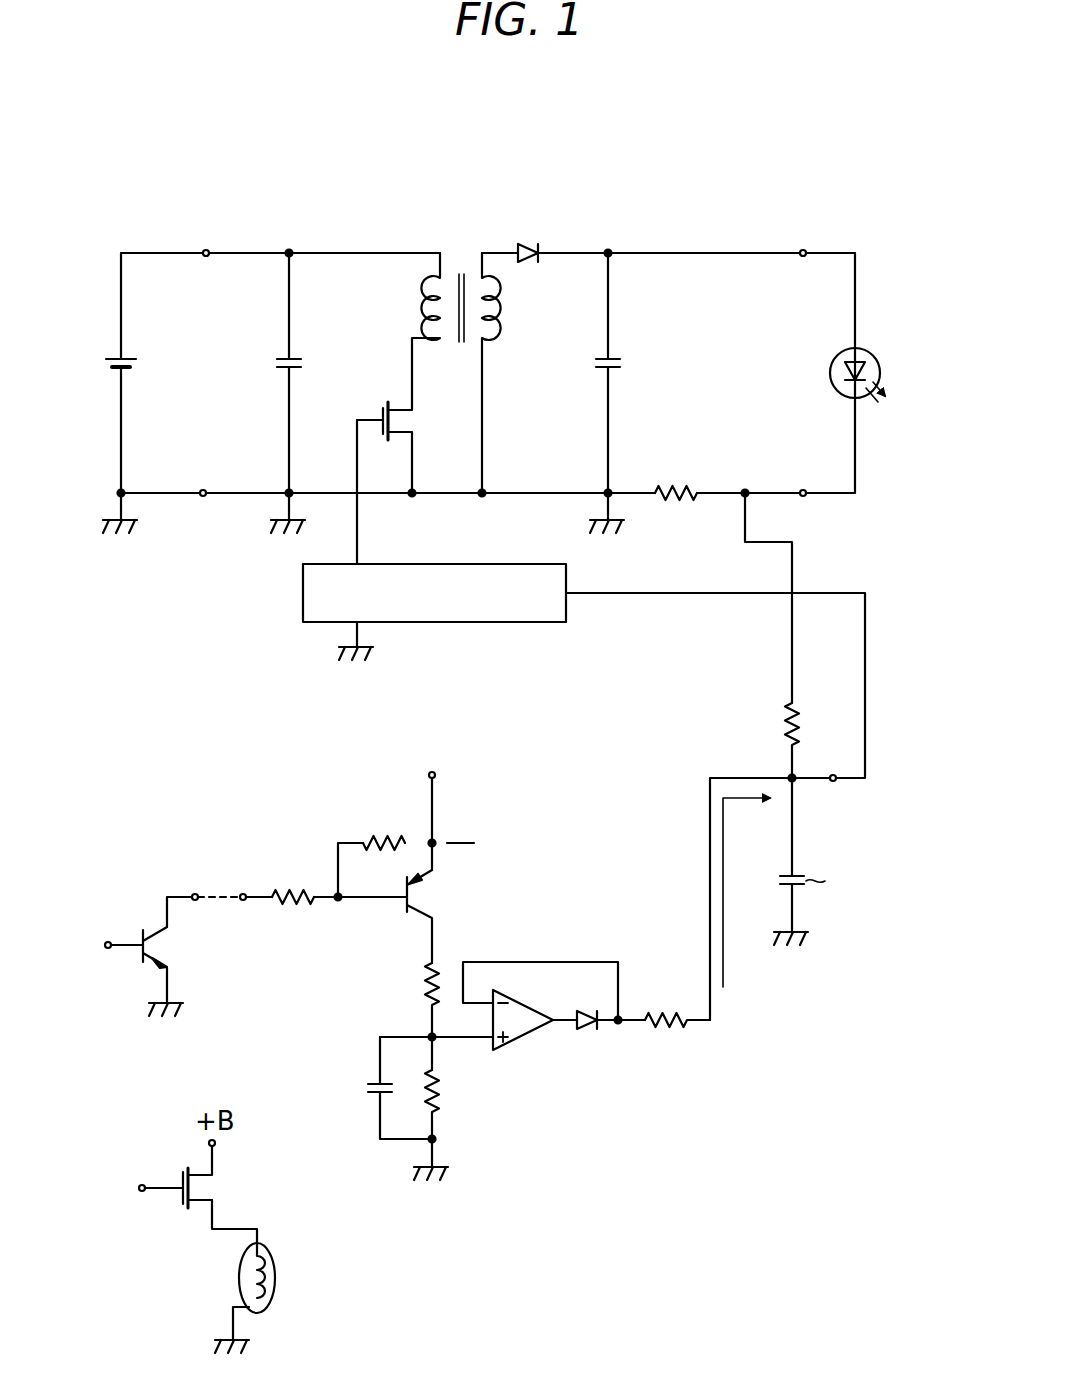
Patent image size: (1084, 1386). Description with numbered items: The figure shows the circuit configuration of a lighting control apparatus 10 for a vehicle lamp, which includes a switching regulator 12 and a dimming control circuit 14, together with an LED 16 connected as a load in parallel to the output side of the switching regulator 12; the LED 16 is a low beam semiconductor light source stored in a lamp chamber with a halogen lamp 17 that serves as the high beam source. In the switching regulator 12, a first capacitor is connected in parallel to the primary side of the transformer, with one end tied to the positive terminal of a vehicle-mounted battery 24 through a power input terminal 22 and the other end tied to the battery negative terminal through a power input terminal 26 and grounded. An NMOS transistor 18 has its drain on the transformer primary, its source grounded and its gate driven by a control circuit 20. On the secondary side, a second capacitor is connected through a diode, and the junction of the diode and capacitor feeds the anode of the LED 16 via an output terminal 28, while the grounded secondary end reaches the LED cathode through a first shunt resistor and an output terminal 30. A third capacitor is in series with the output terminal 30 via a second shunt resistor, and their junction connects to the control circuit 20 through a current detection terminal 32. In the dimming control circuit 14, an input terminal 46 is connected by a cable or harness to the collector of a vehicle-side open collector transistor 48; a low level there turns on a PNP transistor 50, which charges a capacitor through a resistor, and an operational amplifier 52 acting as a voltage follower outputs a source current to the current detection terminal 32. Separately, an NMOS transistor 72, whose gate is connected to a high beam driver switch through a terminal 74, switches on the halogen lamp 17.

The lighting control apparatus 10 is at (440, 188).
The switching regulator 12 is at (332, 212).
The dimming control circuit 14 is at (531, 774).
The LED 16 is at (880, 371).
The halogen lamp 17 is at (277, 1272).
The NMOS transistor 18 is at (414, 420).
The control circuit 20 is at (397, 564).
The power input terminal 22 is at (206, 251).
The vehicle-mounted battery 24 is at (138, 366).
The power input terminal 26 is at (206, 488).
The output terminal 28 is at (803, 250).
The output terminal 30 is at (804, 488).
The current detection terminal 32 is at (833, 783).
The input terminal 46 is at (243, 902).
The vehicle-side open collector transistor 48 is at (146, 930).
The PNP transistor 50 is at (424, 904).
The operational amplifier 52 is at (512, 1043).
The NMOS transistor 72 is at (182, 1176).
The terminal 74 is at (142, 1193).